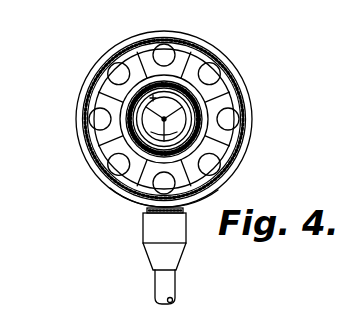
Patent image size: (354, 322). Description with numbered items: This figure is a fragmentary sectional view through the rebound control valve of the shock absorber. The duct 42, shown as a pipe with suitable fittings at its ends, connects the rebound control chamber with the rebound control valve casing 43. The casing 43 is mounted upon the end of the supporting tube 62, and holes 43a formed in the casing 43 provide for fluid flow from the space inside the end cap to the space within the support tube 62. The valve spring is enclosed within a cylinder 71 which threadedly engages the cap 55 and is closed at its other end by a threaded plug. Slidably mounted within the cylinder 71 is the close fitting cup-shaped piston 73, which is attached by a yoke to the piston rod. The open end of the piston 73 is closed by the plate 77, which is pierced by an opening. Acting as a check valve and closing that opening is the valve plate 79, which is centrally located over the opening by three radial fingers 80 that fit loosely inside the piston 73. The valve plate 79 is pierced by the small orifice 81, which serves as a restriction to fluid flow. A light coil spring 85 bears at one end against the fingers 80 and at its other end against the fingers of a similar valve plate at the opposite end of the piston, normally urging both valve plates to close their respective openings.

The duct 42 is at (155, 292).
The rebound control valve casing 43 is at (249, 140).
The holes 43a is at (99, 119).
The cap 55 is at (97, 141).
The supporting tube 62 is at (92, 87).
The cylinder 71 is at (199, 100).
The cup-shaped piston 73 is at (246, 154).
The plate 77 is at (102, 89).
The valve plate 79 is at (110, 188).
The radial fingers 80 is at (118, 50).
The orifice 81 is at (216, 192).
The coil spring 85 is at (193, 56).